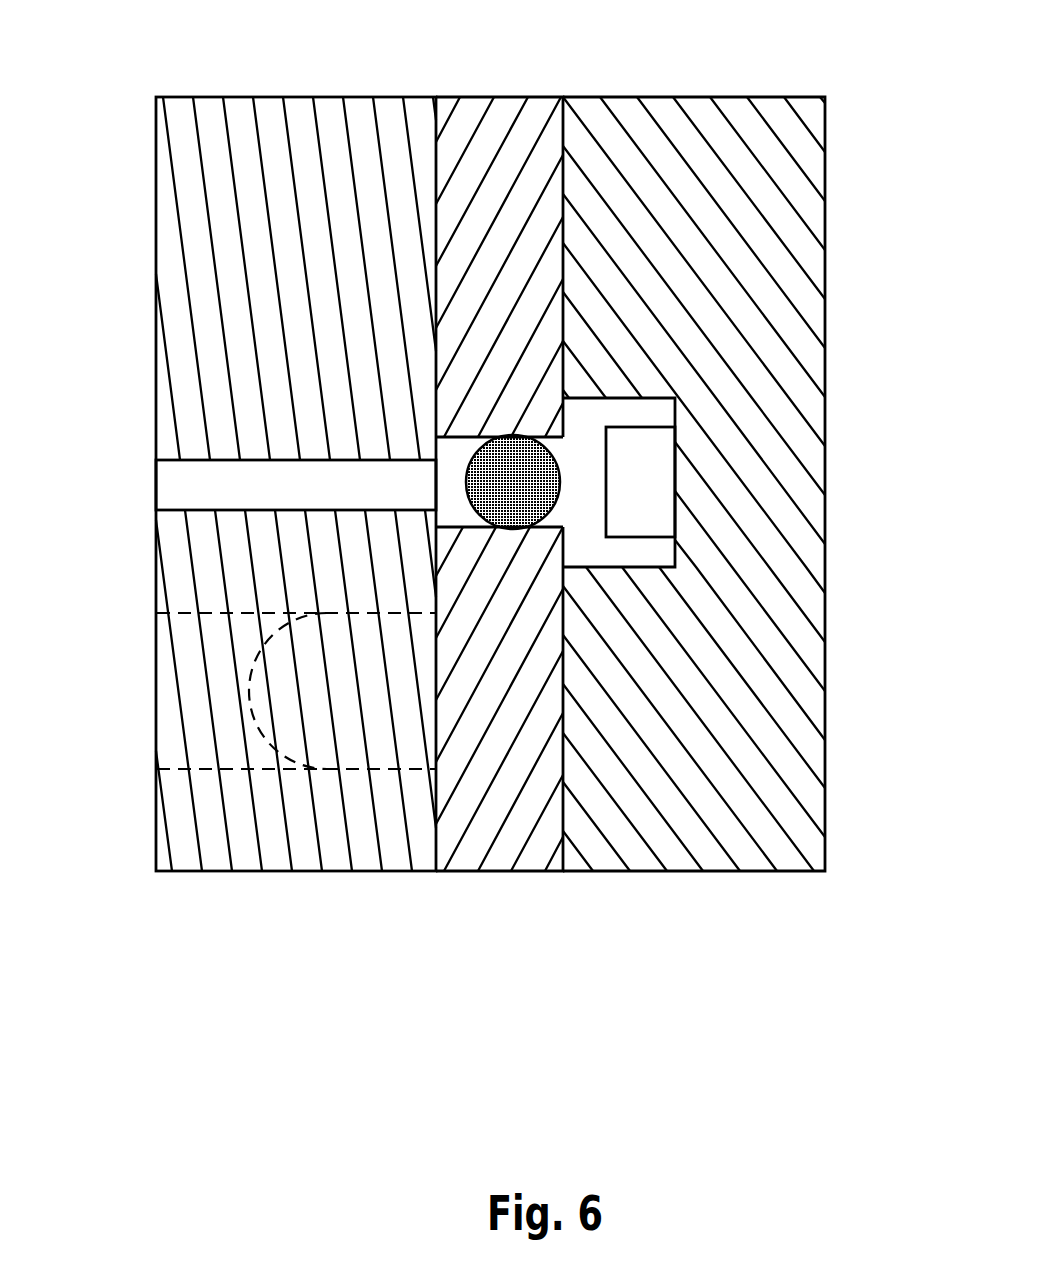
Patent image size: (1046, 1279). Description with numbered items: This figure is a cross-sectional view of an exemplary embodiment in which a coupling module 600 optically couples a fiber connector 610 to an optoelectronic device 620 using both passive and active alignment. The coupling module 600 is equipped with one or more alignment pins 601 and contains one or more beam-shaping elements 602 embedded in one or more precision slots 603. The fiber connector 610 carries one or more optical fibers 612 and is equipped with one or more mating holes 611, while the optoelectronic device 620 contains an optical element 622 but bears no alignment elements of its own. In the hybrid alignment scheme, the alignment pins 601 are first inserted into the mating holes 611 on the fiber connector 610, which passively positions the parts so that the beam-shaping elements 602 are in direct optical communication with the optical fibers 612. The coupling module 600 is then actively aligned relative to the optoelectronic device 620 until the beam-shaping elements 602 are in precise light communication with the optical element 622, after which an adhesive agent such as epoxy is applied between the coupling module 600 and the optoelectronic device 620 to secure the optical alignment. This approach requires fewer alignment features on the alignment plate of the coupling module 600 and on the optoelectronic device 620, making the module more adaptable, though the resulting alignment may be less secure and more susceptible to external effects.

The coupling module 600 is at (553, 97).
The alignment pin 601 is at (255, 700).
The beam-shaping element 602 is at (528, 475).
The precision slot 603 is at (452, 478).
The fiber connector 610 is at (433, 97).
The mating hole 611 is at (183, 769).
The optical fiber 612 is at (183, 483).
The optoelectronic device 620 is at (813, 97).
The optical element 622 is at (635, 497).